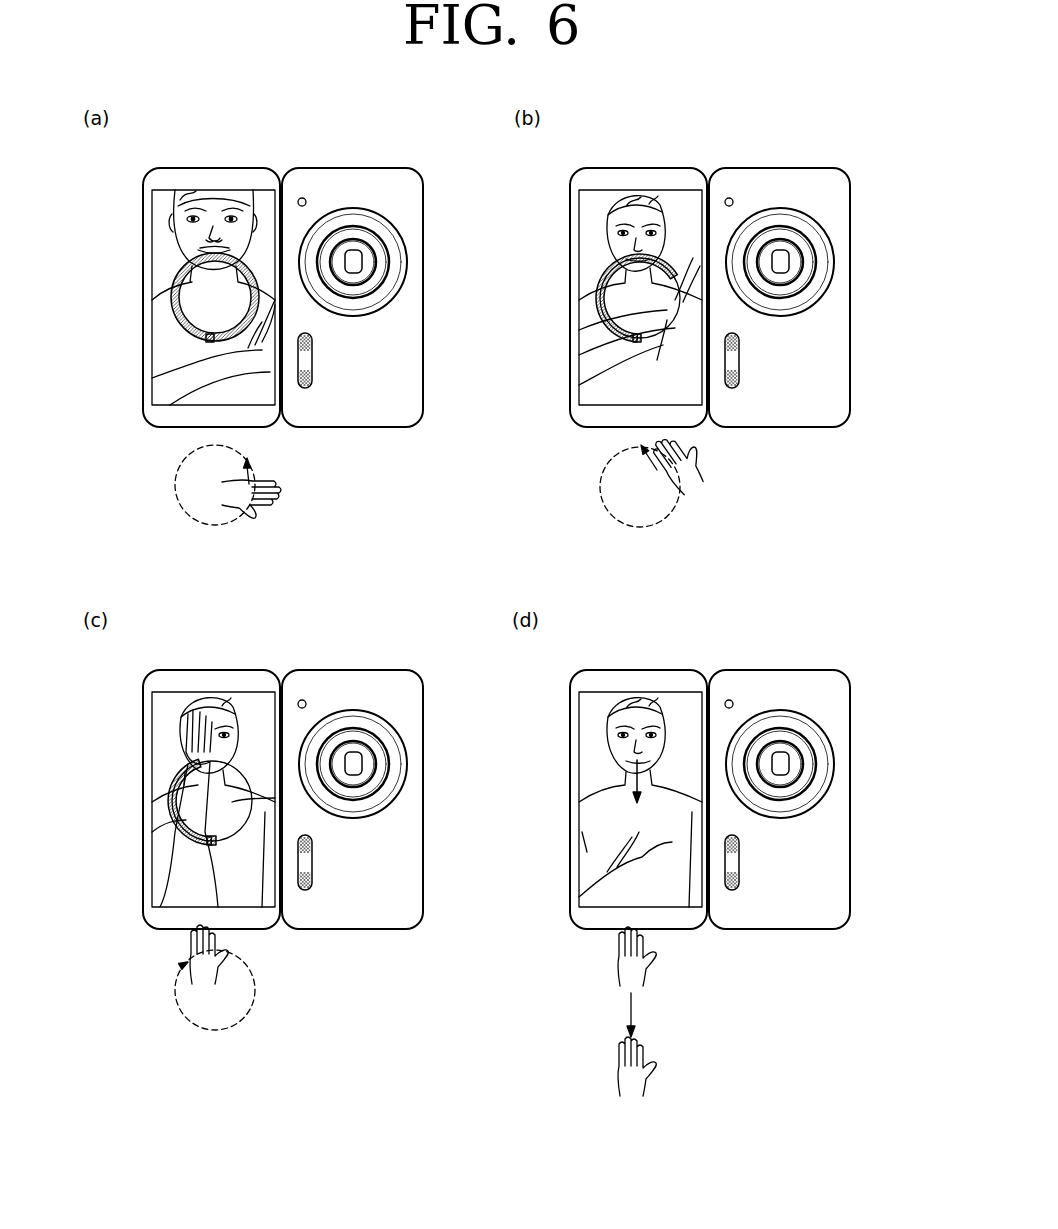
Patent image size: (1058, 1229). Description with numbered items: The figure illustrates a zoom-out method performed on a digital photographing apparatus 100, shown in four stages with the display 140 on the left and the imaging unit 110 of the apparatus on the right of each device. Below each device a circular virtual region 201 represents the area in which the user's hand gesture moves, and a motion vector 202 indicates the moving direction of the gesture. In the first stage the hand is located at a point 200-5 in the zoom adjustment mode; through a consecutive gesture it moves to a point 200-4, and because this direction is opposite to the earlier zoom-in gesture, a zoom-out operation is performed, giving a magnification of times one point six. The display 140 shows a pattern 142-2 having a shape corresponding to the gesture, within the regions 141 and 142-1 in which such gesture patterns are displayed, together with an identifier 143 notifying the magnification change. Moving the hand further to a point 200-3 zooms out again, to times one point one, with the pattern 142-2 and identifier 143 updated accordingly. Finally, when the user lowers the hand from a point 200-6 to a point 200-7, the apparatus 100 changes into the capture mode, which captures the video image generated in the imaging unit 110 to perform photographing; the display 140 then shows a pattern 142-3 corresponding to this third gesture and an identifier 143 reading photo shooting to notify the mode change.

The digital photographing apparatus 100 is at (277, 158).
The imaging unit 110 is at (360, 258).
The display 140 is at (158, 219).
The pattern display region 142-1 is at (193, 296).
The pattern 142-2 is at (177, 265).
The pattern 142-3 is at (636, 778).
The identifier 143 is at (598, 315).
The pattern display region 141 is at (633, 340).
The virtual region 201 is at (178, 468).
The motion vector 202 is at (255, 471).
The point 200-5 is at (222, 498).
The point 200-4 is at (697, 448).
The point 200-3 is at (222, 938).
The point 200-6 is at (653, 965).
The point 200-7 is at (653, 1075).